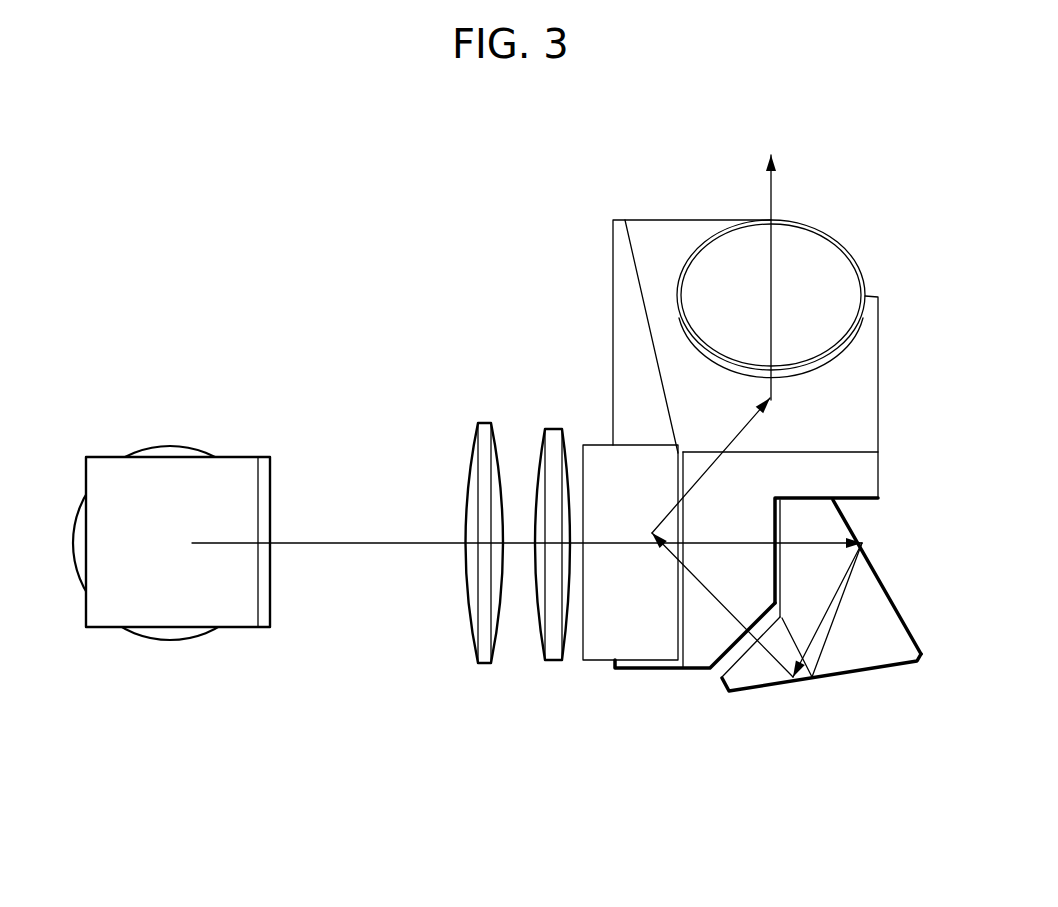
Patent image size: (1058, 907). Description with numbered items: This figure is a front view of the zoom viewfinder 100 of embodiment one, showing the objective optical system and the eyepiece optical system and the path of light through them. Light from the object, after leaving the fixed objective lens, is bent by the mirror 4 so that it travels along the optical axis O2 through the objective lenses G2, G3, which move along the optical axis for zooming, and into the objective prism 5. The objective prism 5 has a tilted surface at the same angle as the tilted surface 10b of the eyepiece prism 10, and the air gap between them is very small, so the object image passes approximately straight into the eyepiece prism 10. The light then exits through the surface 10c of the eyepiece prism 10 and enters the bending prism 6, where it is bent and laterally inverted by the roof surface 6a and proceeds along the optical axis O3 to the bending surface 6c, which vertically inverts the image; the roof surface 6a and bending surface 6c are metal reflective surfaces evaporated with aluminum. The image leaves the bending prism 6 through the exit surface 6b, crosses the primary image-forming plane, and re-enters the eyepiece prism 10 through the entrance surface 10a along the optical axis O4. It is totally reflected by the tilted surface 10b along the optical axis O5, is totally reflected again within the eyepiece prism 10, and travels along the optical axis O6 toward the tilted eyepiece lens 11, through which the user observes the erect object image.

The viewfinder 100 is at (250, 282).
The mirror 4 is at (110, 582).
The optical axis O2 is at (333, 547).
The objective lens G2 is at (487, 642).
The objective lens G3 is at (552, 642).
The objective prism 5 is at (612, 627).
The eyepiece prism 10 is at (850, 400).
The entrance surface 10a is at (735, 642).
The tilted surface 10b is at (633, 307).
The surface 10c is at (777, 523).
The eyepiece lens 11 is at (835, 257).
The optical axis O6 is at (773, 196).
The optical axis O5 is at (702, 472).
The bending prism 6 is at (817, 640).
The roof surface 6a is at (884, 585).
The exit surface 6b is at (718, 675).
The bending surface 6c is at (808, 678).
The optical axis O3 is at (826, 612).
The optical axis O4 is at (733, 692).